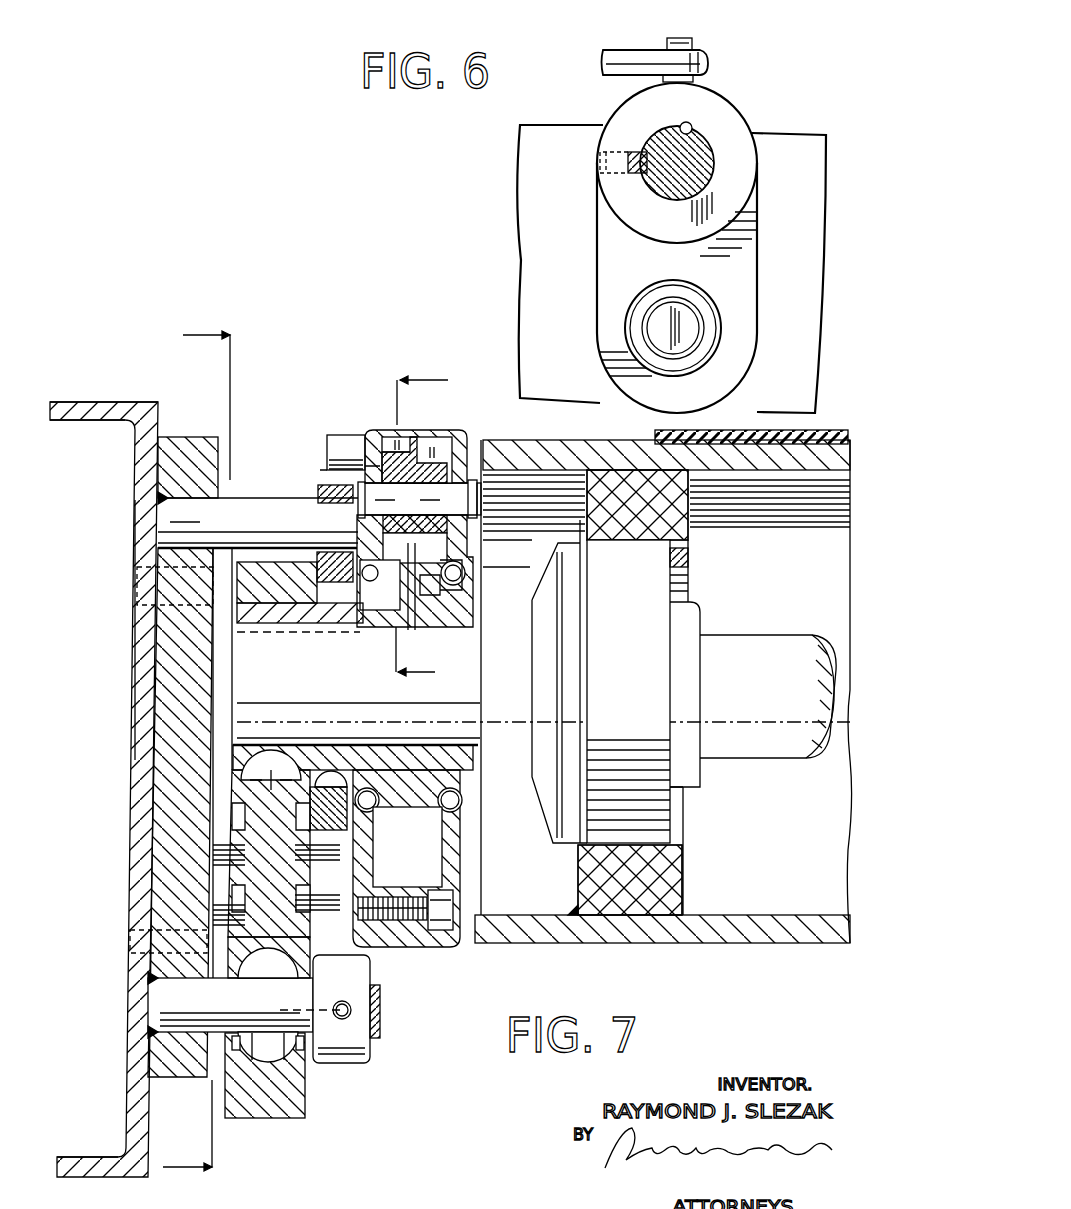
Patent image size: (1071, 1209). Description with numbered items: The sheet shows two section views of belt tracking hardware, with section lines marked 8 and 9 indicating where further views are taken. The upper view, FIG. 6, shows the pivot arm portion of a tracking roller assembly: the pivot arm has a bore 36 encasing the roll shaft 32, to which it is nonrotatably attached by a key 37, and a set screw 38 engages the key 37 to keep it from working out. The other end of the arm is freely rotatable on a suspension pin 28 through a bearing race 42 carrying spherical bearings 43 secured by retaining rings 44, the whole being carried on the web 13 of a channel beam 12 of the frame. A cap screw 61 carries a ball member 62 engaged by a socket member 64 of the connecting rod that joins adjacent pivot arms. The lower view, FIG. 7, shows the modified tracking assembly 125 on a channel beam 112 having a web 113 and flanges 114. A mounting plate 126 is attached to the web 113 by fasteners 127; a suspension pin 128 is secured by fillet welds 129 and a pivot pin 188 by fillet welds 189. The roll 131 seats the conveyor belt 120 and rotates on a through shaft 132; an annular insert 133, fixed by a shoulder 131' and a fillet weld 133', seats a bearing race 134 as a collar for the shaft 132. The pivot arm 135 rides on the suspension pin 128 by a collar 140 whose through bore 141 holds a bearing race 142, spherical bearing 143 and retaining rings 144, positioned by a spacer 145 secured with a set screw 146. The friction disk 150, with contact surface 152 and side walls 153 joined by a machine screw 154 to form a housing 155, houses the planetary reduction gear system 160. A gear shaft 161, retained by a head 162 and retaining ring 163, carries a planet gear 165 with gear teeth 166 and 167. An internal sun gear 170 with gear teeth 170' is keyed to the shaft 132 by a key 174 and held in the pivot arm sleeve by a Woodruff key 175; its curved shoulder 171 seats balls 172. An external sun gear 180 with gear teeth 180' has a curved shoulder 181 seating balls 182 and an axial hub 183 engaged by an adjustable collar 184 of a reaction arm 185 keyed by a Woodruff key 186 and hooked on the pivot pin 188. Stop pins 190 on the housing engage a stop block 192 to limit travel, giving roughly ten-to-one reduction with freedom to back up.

In FIG. 6, the channel beam 12 is at (770, 133).
In FIG. 6, the web 13 is at (822, 168).
In FIG. 6, the suspension pin 28 is at (690, 323).
In FIG. 6, the shaft 32 is at (700, 158).
In FIG. 6, the bore 36 is at (690, 126).
In FIG. 6, the key 37 is at (636, 152).
In FIG. 6, the set screw 38 is at (600, 172).
In FIG. 6, the bearing race 42 is at (652, 303).
In FIG. 6, the spherical bearings 43 is at (645, 318).
In FIG. 6, the retaining rings 44 is at (661, 284).
In FIG. 6, the cap screw 61 is at (685, 38).
In FIG. 6, the ball member 62 is at (695, 50).
In FIG. 6, the socket member 64 is at (710, 63).
In FIG. 7, the section line 8 is at (410, 527).
In FIG. 7, the section line 9 is at (208, 752).
In FIG. 7, the channel beam 112 is at (68, 402).
In FIG. 7, the web 113 is at (135, 668).
In FIG. 7, the flanges 114 is at (100, 427).
In FIG. 7, the conveyor belt 120 is at (812, 432).
In FIG. 7, the tracking assembly 125 is at (155, 370).
In FIG. 7, the mounting plate 126 is at (165, 724).
In FIG. 7, the fasteners 127 is at (150, 567).
In FIG. 7, the suspension pin 128 is at (165, 1002).
In FIG. 7, the fillet welds 129 is at (146, 978).
In FIG. 7, the roll 131 is at (662, 946).
In FIG. 7, the shoulder 131' is at (702, 851).
In FIG. 7, the through shaft 132 is at (720, 640).
In FIG. 7, the annular insert 133 is at (657, 880).
In FIG. 7, the fillet weld 133' is at (555, 893).
In FIG. 7, the bearing race 134 is at (645, 599).
In FIG. 7, the pivot arm 135 is at (247, 828).
In FIG. 7, the collar 140 is at (295, 1110).
In FIG. 7, the through bore 141 is at (295, 1086).
In FIG. 7, the bearing race 142 is at (260, 1075).
In FIG. 7, the spherical bearing 143 is at (230, 1053).
In FIG. 7, the retaining rings 144 is at (300, 1070).
In FIG. 7, the spacer 145 is at (375, 1021).
In FIG. 7, the set screw 146 is at (351, 1010).
In FIG. 7, the friction disk 150 is at (378, 420).
In FIG. 7, the contact surface 152 is at (418, 440).
In FIG. 7, the side walls 153 is at (440, 848).
In FIG. 7, the machine screw 154 is at (455, 904).
In FIG. 7, the housing 155 is at (455, 876).
In FIG. 7, the planetary reduction gear system 160 is at (504, 621).
In FIG. 7, the gear shaft 161 is at (477, 482).
In FIG. 7, the head 162 is at (357, 501).
In FIG. 7, the retaining ring 163 is at (488, 460).
In FIG. 7, the planet gear 165 is at (388, 466).
In FIG. 7, the gear teeth 166 is at (393, 443).
In FIG. 7, the gear teeth 167 is at (440, 447).
In FIG. 7, the internal sun gear 170 is at (438, 578).
In FIG. 7, the gear teeth 170' is at (439, 858).
In FIG. 7, the curved shoulder 171 is at (460, 590).
In FIG. 7, the balls 172 is at (463, 574).
In FIG. 7, the key 174 is at (244, 648).
In FIG. 7, the Woodruff key 175 is at (270, 750).
In FIG. 7, the external sun gear 180 is at (378, 610).
In FIG. 7, the gear teeth 180' is at (442, 612).
In FIG. 7, the curved shoulder 181 is at (400, 585).
In FIG. 7, the balls 182 is at (380, 580).
In FIG. 7, the axial hub 183 is at (360, 585).
In FIG. 7, the adjustable collar 184 is at (319, 566).
In FIG. 7, the reaction arm 185 is at (318, 493).
In FIG. 7, the Woodruff key 186 is at (332, 772).
In FIG. 7, the pivot pin 188 is at (170, 518).
In FIG. 7, the fillet welds 189 is at (156, 497).
In FIG. 7, the stop pins 190 is at (330, 445).
In FIG. 7, the stop block 192 is at (218, 875).